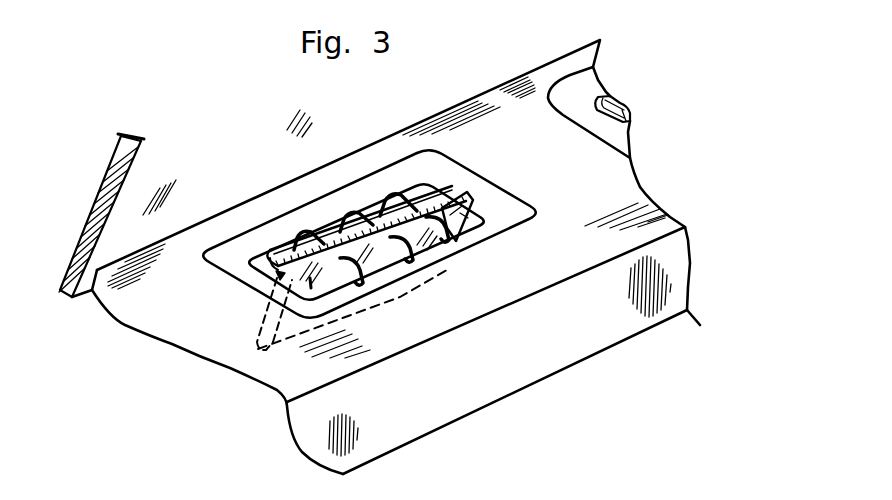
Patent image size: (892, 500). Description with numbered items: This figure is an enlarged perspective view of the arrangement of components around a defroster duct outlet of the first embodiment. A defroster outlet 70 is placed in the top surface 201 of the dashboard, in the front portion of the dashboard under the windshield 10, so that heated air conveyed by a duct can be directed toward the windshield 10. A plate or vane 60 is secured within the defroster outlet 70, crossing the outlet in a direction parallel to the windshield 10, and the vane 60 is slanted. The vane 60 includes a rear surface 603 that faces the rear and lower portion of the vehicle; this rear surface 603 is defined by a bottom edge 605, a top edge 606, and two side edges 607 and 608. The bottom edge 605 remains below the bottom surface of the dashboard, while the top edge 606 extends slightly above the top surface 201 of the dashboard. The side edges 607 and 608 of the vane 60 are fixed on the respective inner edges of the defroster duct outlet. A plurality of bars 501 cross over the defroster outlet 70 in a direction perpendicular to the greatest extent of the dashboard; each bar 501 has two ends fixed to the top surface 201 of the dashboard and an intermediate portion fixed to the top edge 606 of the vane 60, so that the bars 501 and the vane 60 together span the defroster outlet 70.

The windshield 10 is at (130, 167).
The top surface 201 is at (500, 118).
The bottom edge 605 is at (253, 345).
The side edge 608 is at (267, 322).
The defroster outlet 70 is at (280, 265).
The top edge 606 is at (262, 273).
The vane 60 is at (308, 285).
The bar 501 is at (395, 262).
The rear surface 603 is at (380, 262).
The side edge 607 is at (473, 202).